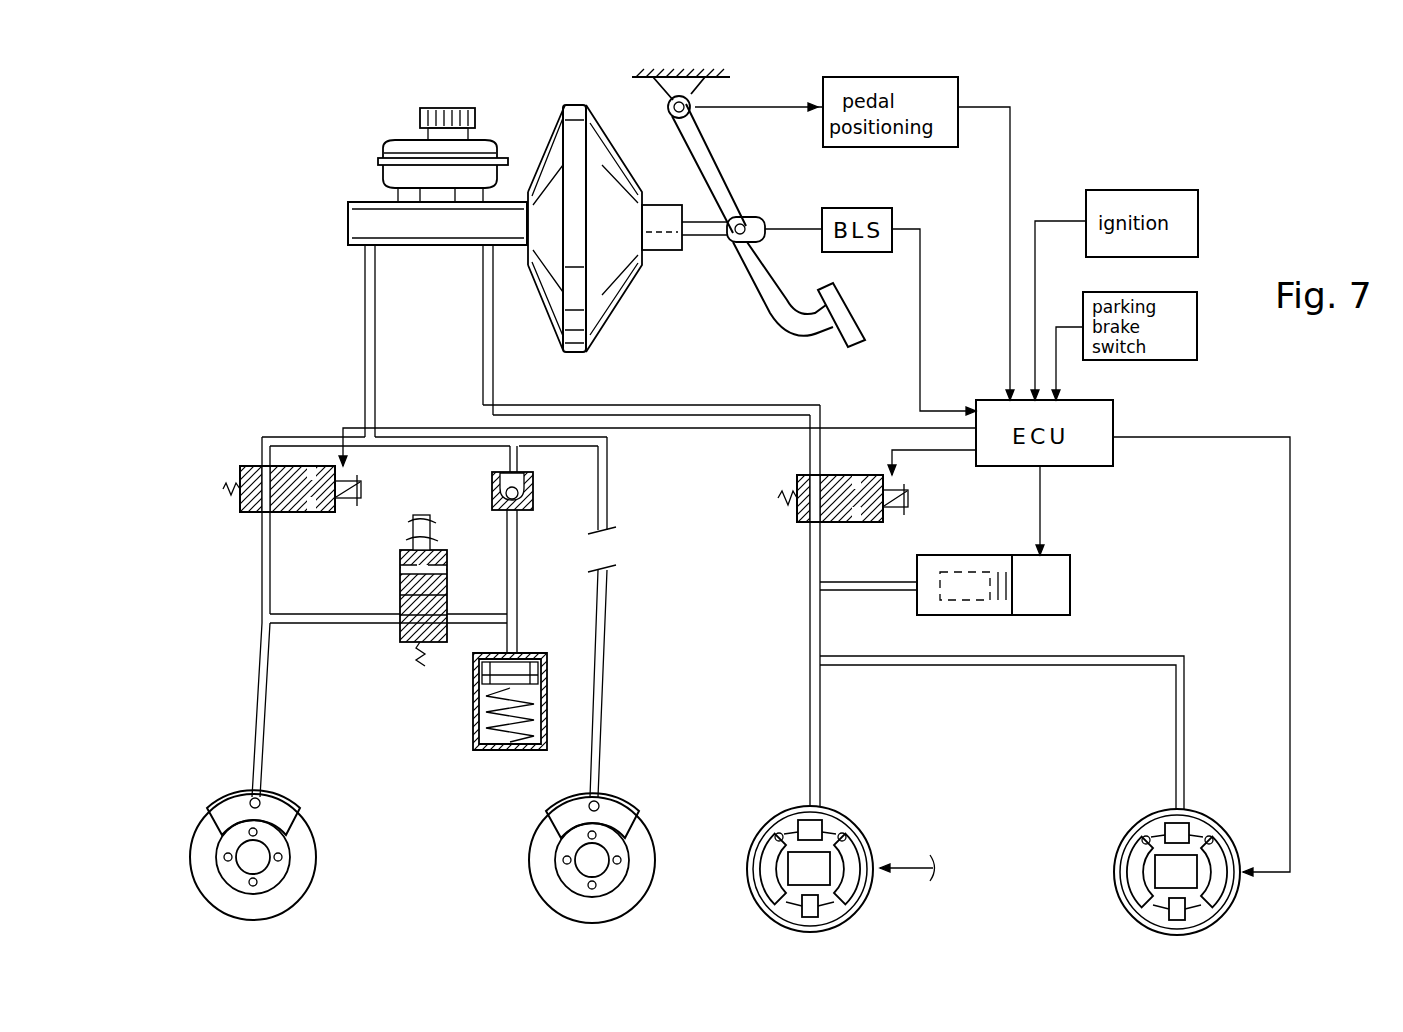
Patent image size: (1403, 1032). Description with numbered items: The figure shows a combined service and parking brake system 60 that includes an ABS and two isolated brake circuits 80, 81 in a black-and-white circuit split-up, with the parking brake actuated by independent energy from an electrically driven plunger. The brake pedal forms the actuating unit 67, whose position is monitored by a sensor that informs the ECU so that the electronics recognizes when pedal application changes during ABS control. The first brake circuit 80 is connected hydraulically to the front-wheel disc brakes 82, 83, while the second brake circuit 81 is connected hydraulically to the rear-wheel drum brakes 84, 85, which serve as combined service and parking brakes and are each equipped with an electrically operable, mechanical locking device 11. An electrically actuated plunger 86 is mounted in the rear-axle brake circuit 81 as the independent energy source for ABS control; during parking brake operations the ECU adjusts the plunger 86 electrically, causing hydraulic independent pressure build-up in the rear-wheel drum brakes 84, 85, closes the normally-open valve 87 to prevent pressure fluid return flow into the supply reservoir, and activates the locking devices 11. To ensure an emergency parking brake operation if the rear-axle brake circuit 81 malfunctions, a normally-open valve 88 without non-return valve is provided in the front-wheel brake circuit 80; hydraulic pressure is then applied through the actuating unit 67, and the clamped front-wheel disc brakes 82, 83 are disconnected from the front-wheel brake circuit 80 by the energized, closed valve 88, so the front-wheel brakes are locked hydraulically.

The combined service and parking brake system 60 is at (344, 150).
The actuating unit 67 is at (624, 108).
The first brake circuit 80 is at (365, 368).
The second brake circuit 81 is at (483, 368).
The normally-open valve 88 is at (302, 512).
The normally-open valve 87 is at (803, 522).
The electrically actuated plunger 86 is at (1070, 585).
The front-wheel disc brake 82 is at (295, 883).
The front-wheel disc brake 83 is at (543, 885).
The rear-wheel drum brake 84 is at (748, 888).
The rear-wheel drum brake 85 is at (1115, 896).
The locking device 11 is at (830, 870).